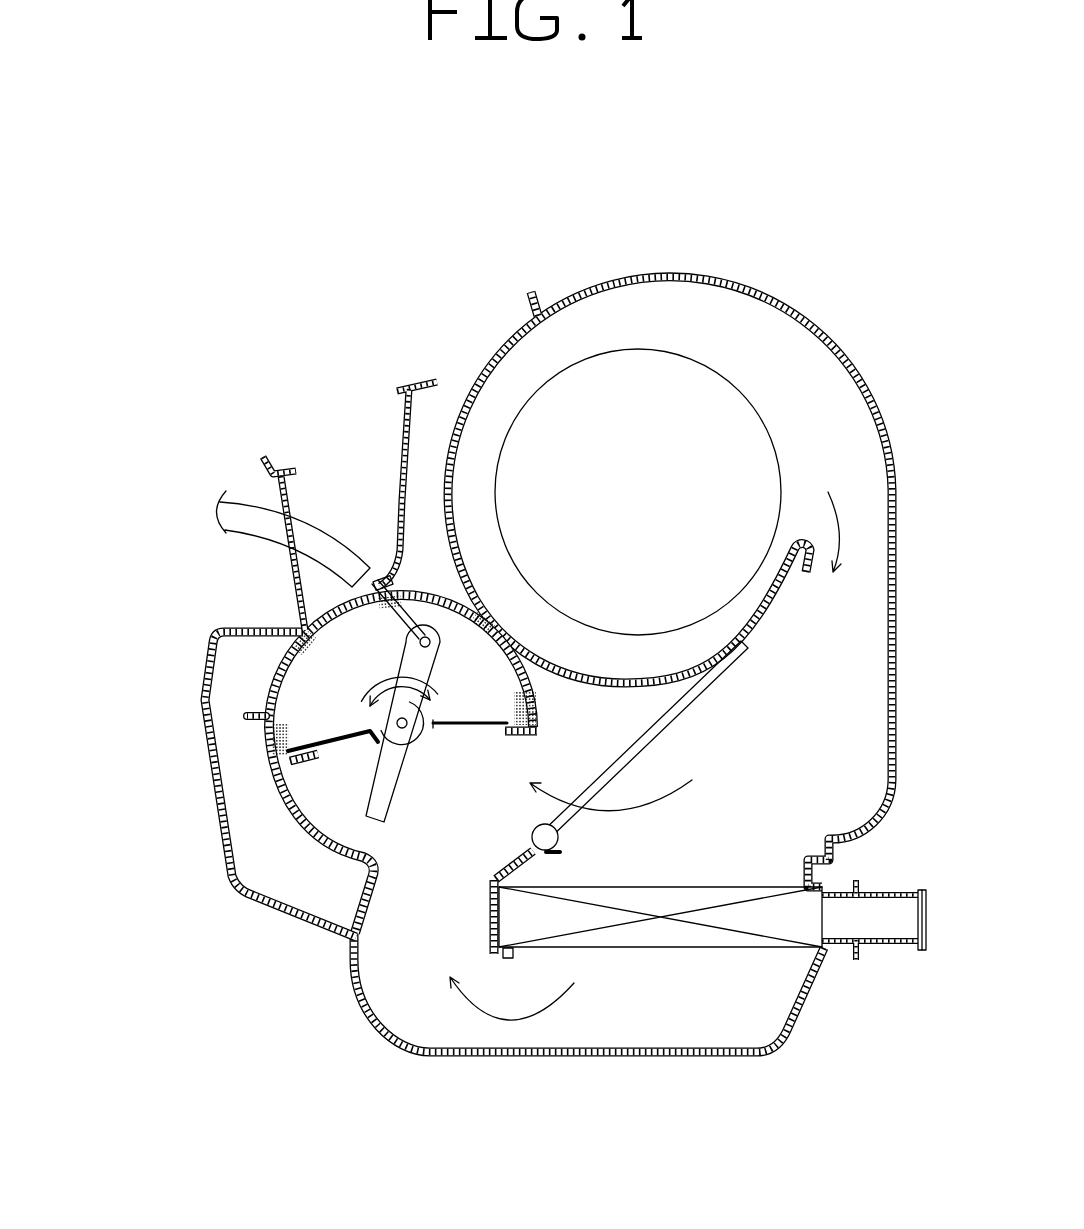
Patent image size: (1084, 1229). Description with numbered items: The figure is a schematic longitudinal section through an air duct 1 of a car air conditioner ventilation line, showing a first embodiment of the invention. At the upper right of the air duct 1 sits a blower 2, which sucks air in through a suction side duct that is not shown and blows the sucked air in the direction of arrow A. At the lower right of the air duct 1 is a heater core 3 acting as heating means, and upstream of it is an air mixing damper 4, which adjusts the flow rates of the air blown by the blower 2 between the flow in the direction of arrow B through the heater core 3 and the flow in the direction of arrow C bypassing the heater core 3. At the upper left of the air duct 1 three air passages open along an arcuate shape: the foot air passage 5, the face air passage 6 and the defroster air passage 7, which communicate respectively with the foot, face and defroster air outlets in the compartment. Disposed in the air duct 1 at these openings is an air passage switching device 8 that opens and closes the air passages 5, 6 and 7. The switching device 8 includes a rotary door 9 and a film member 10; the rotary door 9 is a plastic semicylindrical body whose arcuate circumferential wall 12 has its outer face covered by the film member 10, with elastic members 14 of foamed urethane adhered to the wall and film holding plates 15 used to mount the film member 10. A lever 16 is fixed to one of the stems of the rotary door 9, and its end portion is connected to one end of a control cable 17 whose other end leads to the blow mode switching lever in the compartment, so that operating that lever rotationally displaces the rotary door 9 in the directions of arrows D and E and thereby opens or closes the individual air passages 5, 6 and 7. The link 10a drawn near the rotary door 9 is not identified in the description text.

The air duct 1 is at (363, 1015).
The blower 2 is at (683, 417).
The heater core 3 is at (664, 930).
The air mixing damper 4 is at (697, 695).
The foot air passage 5 is at (248, 693).
The face air passage 6 is at (330, 600).
The defroster air passage 7 is at (428, 580).
The air passage switching device 8 is at (447, 747).
The rotary door 9 is at (473, 717).
The film member 10 is at (273, 668).
The link rod 10a is at (341, 613).
The circumferential wall 12 is at (291, 697).
The elastic members 14 is at (487, 616).
The film holding plates 15 is at (303, 764).
The lever 16 is at (383, 808).
The control cable 17 is at (374, 580).
The direction of air blown by blower A is at (838, 523).
The direction of air flow through heater core B is at (528, 1020).
The direction of air flow bypassing heater core C is at (640, 813).
The direction of rotary door rotation D is at (413, 676).
The direction of rotary door rotation E is at (413, 747).